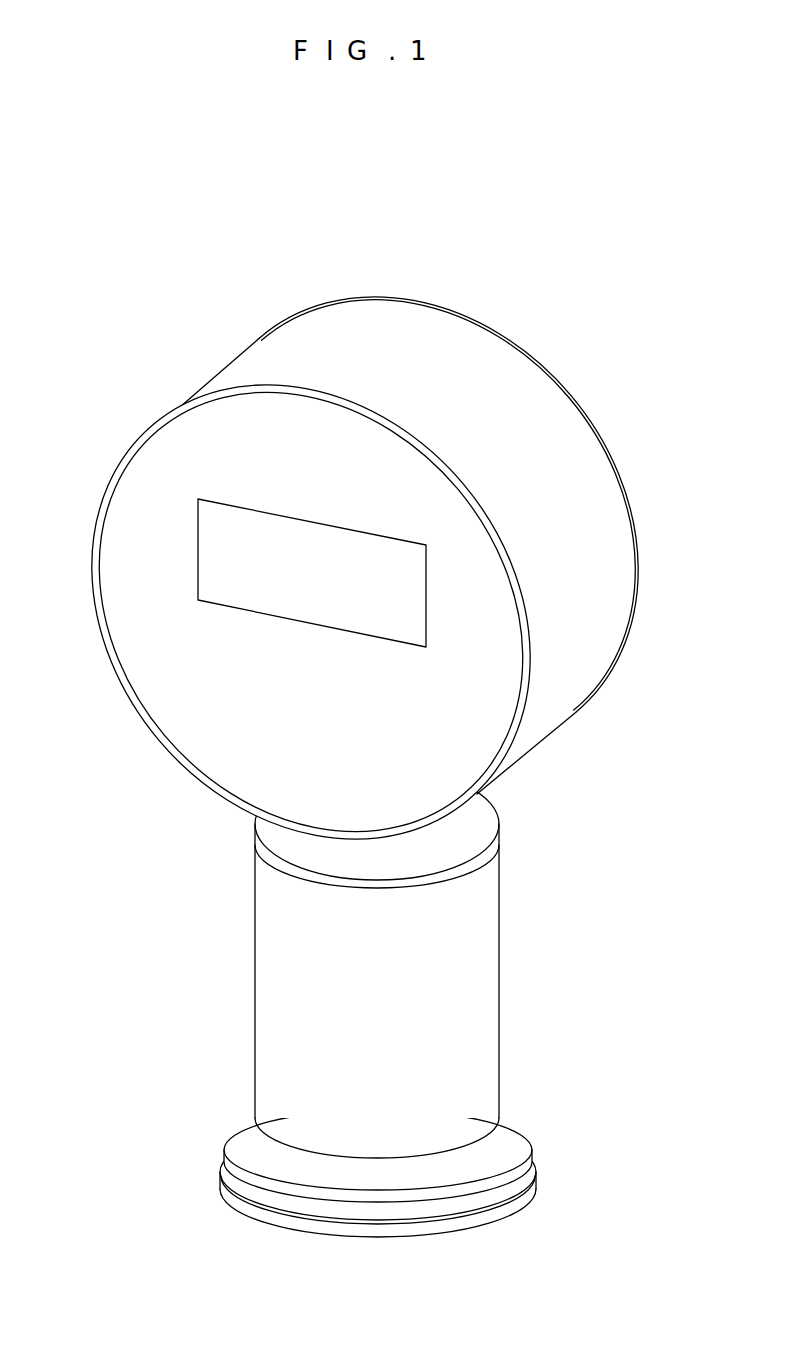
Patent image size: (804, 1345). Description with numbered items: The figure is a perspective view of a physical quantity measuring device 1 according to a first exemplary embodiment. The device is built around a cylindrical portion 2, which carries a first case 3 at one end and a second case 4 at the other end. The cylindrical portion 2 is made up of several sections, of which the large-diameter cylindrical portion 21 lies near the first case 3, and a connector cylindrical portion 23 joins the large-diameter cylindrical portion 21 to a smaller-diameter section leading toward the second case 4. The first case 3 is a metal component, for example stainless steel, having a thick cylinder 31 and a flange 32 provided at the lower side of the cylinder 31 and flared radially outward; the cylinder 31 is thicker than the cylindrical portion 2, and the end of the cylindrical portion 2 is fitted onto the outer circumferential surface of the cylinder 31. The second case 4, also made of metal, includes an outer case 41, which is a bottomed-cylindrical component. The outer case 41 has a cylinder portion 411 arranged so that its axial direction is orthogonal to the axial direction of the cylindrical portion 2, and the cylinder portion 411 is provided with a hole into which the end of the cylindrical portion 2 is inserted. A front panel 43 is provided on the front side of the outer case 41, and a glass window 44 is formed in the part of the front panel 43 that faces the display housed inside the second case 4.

The physical quantity measuring device 1 is at (330, 711).
The cylindrical portion 2 is at (422, 963).
The large-diameter cylindrical portion 21 is at (483, 1033).
The connector cylindrical portion 23 is at (478, 826).
The first case 3 is at (384, 1158).
The cylinder 31 is at (263, 1143).
The flange 32 is at (255, 1185).
The second case 4 is at (330, 601).
The outer case 41 is at (483, 352).
The cylinder portion 411 is at (578, 461).
The front panel 43 is at (120, 584).
The glass window 44 is at (270, 533).